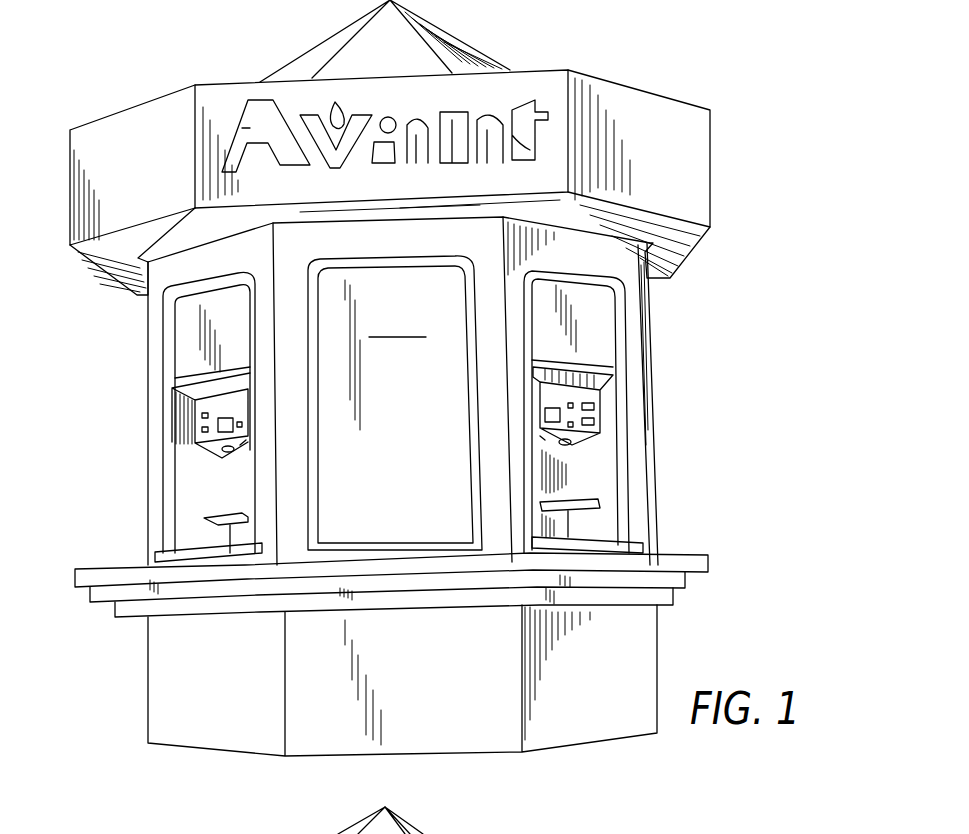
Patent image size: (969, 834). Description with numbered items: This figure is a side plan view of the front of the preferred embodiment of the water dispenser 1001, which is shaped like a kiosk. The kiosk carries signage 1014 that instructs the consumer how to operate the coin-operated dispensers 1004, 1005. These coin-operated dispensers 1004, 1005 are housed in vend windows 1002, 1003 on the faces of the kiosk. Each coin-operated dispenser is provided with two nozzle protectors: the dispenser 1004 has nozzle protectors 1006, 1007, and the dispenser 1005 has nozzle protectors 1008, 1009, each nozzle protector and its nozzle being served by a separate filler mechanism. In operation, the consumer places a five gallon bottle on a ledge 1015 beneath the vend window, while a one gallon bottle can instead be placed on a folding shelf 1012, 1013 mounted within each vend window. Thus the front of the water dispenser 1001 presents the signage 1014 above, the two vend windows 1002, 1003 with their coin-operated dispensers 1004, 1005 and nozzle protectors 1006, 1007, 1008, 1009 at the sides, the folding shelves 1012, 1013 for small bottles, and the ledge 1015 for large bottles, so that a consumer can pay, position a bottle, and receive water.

The water dispenser 1001 is at (620, 67).
The vend window 1002 is at (615, 442).
The vend window 1003 is at (175, 447).
The coin-operated dispenser 1004 is at (587, 395).
The coin-operated dispenser 1005 is at (200, 405).
The nozzle protector 1006 is at (568, 446).
The nozzle protector 1007 is at (543, 437).
The nozzle protector 1008 is at (224, 452).
The nozzle protector 1009 is at (247, 446).
The folding shelf 1012 is at (231, 528).
The folding shelf 1013 is at (568, 510).
The signage 1014 is at (198, 332).
The ledge 1015 is at (192, 540).